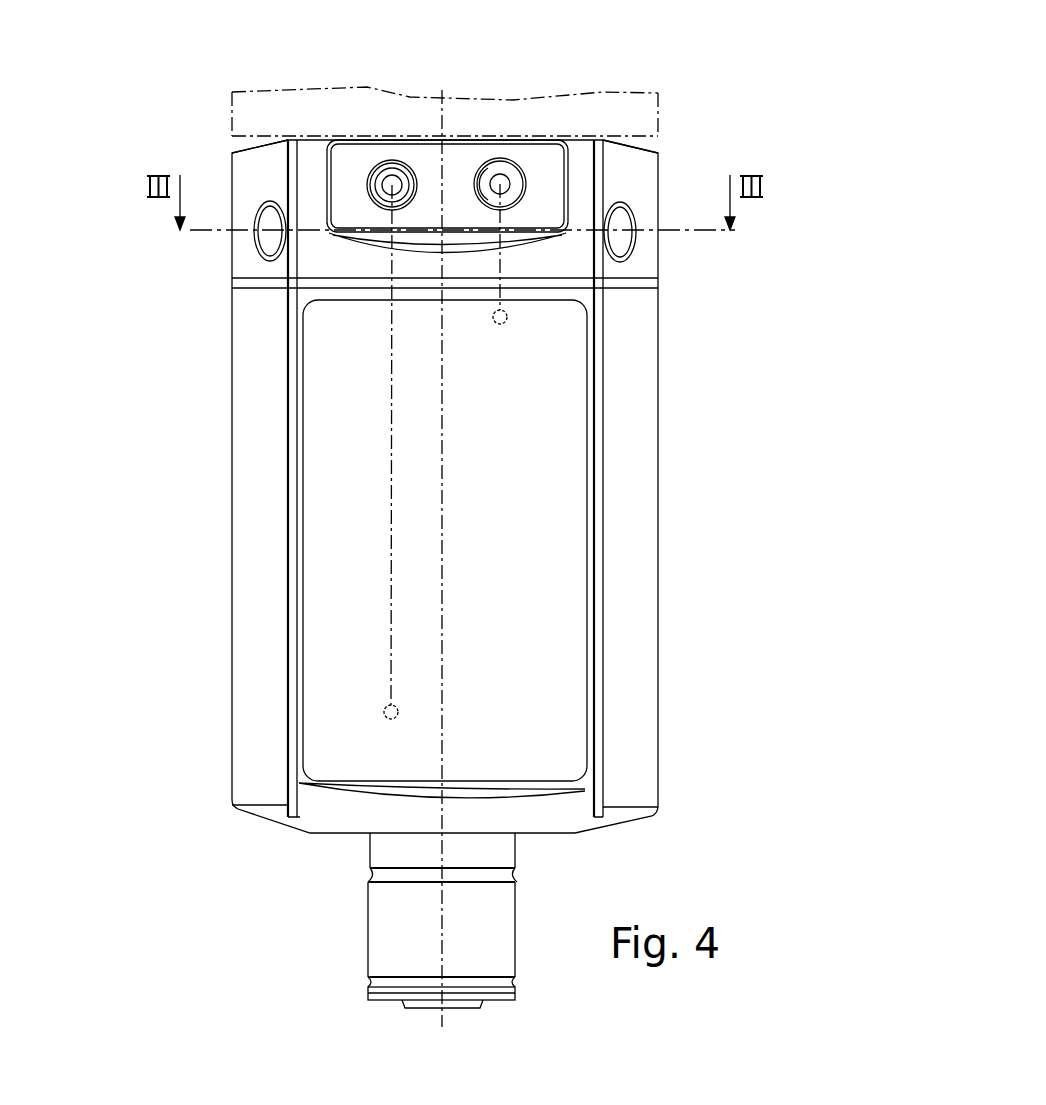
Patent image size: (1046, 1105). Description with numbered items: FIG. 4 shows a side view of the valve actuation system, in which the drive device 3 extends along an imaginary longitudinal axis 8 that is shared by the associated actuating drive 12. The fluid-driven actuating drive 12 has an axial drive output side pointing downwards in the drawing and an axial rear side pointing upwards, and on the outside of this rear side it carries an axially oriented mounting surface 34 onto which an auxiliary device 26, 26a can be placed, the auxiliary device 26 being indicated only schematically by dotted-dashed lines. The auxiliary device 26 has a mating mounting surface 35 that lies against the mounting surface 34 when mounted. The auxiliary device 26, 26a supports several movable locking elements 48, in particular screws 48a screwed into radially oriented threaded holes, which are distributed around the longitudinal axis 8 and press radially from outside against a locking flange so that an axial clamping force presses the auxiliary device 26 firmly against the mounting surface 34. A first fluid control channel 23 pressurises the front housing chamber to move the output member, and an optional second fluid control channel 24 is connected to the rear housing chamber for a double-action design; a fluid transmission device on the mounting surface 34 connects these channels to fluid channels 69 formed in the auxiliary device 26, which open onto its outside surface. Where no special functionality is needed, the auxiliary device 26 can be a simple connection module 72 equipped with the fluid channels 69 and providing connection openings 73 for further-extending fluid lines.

The drive device 3 is at (220, 450).
The longitudinal axis 8 is at (443, 468).
The actuating drive 12 is at (660, 432).
The first fluid control channel 23 is at (388, 467).
The second fluid control channel 24 is at (500, 268).
The auxiliary device 26 is at (647, 120).
The auxiliary device 26a is at (445, 111).
The mounting surface 34 is at (547, 268).
The mating mounting surface 35 is at (630, 296).
The locking element 48 is at (287, 229).
The screw 48a is at (606, 232).
The fluid channel 69 is at (392, 178).
The connection module 72 is at (642, 190).
The connection opening 73 is at (482, 178).